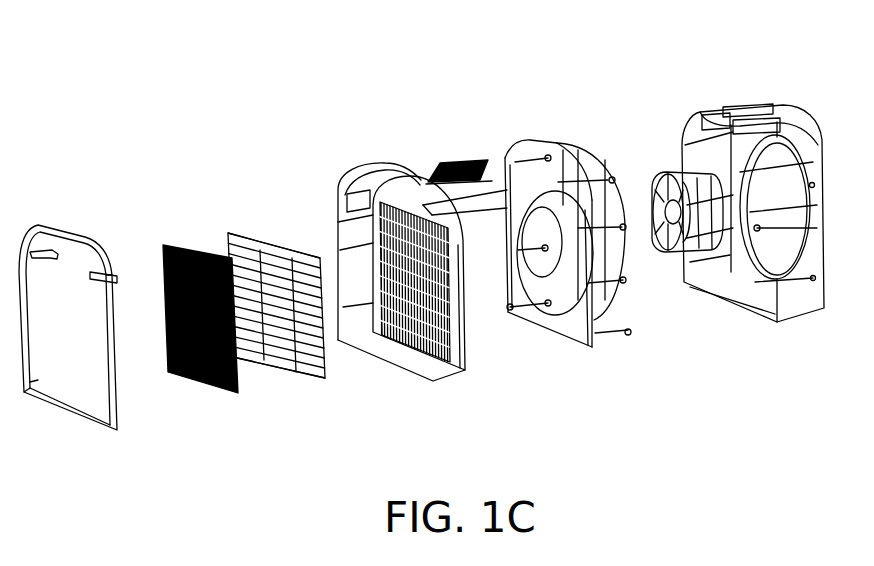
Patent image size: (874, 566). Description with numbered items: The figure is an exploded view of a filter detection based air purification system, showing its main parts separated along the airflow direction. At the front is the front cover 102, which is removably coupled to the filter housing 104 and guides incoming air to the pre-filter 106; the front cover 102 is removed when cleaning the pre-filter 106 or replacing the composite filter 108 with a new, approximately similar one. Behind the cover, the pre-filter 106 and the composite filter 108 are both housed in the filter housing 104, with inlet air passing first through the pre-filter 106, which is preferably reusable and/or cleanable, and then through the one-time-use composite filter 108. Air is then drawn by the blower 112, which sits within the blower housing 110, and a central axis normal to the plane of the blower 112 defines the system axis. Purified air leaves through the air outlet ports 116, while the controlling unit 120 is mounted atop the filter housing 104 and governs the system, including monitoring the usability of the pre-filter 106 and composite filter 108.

The front cover 102 is at (103, 368).
The filter housing 104 is at (458, 338).
The pre-filter 106 is at (173, 245).
The composite filter 108 is at (275, 245).
The blower housing 110 is at (588, 160).
The blower 112 is at (672, 255).
The air outlet ports 116 is at (757, 110).
The controlling unit 120 is at (448, 162).